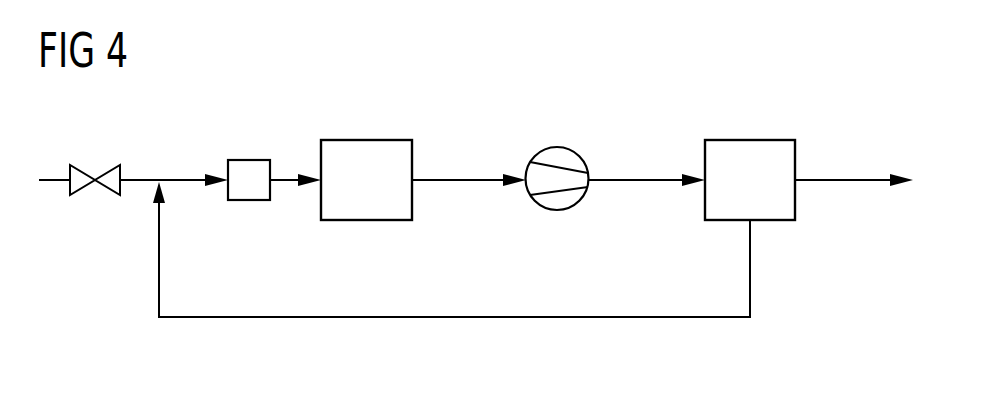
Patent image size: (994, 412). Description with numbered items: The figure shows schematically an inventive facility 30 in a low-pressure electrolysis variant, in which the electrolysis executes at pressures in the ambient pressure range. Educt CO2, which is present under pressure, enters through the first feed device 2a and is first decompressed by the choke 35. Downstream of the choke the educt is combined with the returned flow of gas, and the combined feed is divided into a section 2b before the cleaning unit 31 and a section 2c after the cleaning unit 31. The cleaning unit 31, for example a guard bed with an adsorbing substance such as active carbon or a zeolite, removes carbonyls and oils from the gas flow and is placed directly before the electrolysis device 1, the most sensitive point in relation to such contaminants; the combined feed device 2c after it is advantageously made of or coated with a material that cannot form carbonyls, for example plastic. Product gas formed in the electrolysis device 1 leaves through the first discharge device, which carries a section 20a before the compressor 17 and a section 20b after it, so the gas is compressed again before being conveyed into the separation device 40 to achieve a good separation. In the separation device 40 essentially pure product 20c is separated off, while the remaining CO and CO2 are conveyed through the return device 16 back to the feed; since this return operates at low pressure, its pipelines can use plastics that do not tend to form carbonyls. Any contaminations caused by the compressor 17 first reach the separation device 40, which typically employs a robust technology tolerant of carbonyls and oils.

The electrolysis device 1 is at (368, 139).
The first feed device 2a is at (58, 178).
The combined feed device 2b is at (180, 178).
The combined feed device 2c is at (290, 178).
The return device 16 is at (161, 254).
The compressor 17 is at (558, 147).
The first discharge device section 20a is at (458, 178).
The first discharge device section 20b is at (632, 178).
The product 20c is at (840, 178).
The facility 30 is at (96, 263).
The cleaning unit 31 is at (250, 159).
The choke 35 is at (91, 168).
The separation device 40 is at (750, 139).